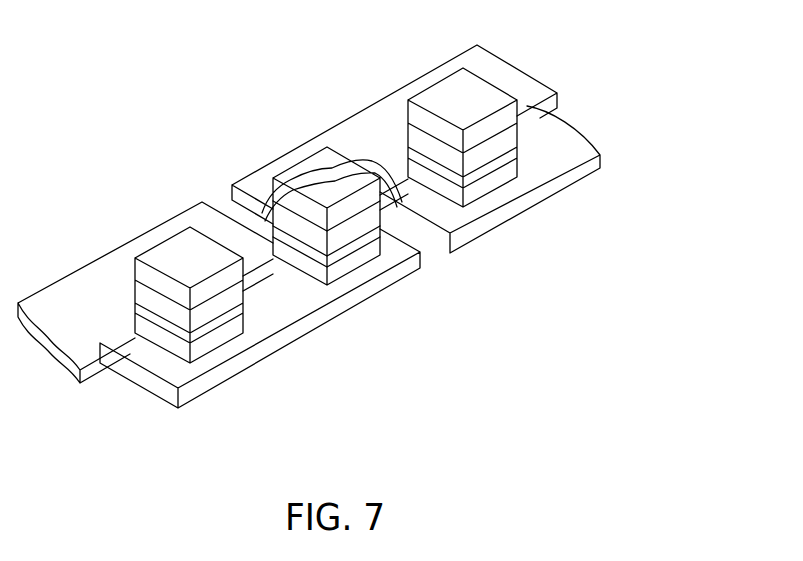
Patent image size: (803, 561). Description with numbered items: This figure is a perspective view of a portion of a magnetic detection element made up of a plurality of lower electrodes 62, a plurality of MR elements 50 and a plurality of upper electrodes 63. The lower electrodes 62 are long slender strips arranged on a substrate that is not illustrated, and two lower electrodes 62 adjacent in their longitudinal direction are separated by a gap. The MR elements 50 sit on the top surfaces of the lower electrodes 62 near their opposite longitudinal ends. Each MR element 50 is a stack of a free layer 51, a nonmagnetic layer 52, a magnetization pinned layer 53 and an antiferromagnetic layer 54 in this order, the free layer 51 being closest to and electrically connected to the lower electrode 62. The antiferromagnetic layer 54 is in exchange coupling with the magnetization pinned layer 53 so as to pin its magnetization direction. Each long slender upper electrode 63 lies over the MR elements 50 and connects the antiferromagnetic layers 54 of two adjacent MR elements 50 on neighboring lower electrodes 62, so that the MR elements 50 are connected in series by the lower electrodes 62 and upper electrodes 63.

The MR element 50 is at (320, 247).
The free layer 51 is at (337, 265).
The nonmagnetic layer 52 is at (357, 252).
The magnetization pinned layer 53 is at (380, 246).
The antiferromagnetic layer 54 is at (406, 262).
The lower electrode 62 is at (238, 368).
The upper electrode 63 is at (367, 112).